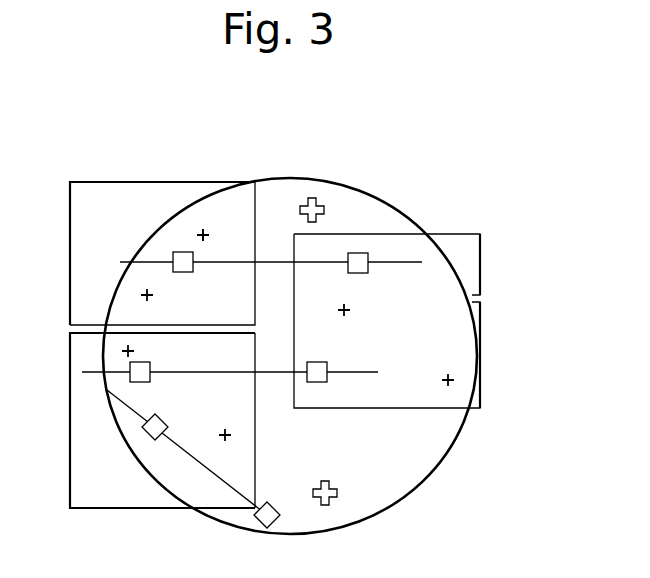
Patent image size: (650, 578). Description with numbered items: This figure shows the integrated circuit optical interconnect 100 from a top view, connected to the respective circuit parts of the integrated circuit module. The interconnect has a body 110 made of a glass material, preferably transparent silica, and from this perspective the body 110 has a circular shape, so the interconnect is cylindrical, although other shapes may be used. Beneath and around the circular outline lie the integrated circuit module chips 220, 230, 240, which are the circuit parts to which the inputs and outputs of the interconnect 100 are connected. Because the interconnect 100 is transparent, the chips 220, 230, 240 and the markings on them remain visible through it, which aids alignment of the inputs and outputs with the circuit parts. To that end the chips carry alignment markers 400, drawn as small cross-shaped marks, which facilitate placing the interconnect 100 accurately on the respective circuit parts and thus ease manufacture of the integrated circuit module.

The integrated circuit optical interconnect 100 is at (334, 153).
The body 110 is at (395, 208).
The integrated circuit module chip 220 is at (70, 233).
The integrated circuit module chip 230 is at (480, 268).
The integrated circuit module chip 240 is at (70, 418).
The alignment marker 400 is at (198, 228).